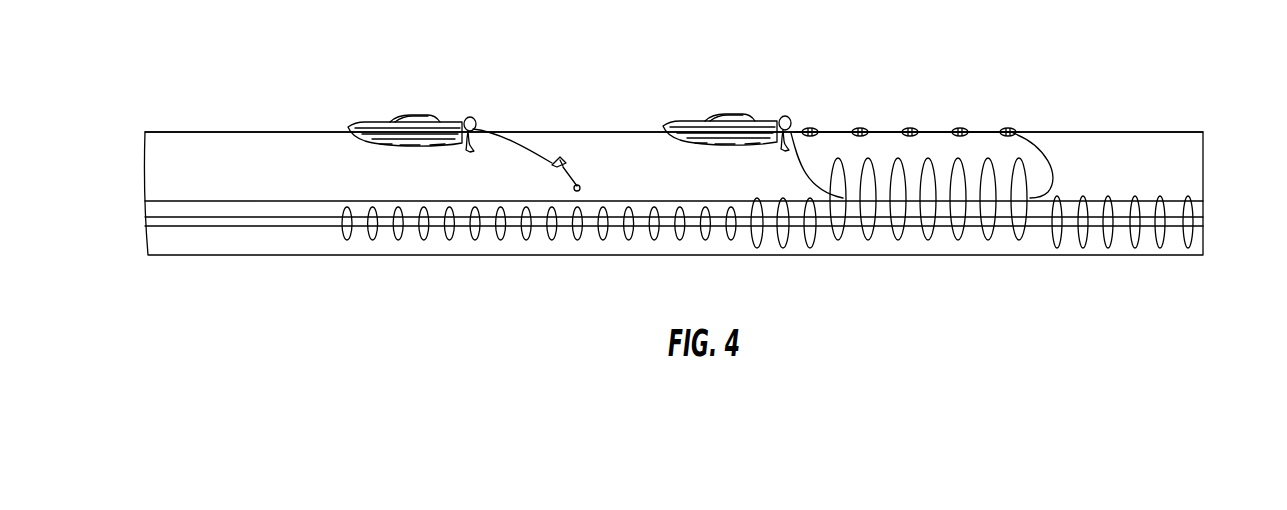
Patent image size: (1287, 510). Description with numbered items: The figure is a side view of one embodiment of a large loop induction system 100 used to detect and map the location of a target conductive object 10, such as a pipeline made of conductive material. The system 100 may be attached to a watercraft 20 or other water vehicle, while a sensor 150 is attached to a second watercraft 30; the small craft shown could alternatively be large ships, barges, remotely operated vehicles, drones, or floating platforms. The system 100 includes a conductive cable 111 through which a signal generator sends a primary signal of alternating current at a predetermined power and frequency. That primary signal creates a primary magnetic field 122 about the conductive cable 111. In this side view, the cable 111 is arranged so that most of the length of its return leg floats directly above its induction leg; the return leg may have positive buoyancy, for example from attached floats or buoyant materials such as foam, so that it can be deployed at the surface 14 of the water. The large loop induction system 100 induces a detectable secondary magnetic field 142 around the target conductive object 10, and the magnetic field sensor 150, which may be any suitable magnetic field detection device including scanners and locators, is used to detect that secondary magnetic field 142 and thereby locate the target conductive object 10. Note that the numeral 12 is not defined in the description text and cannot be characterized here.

The target conductive object 10 is at (1200, 216).
The water layer 12 is at (1186, 201).
The surface 14 is at (1165, 130).
The watercraft 20 is at (745, 118).
The second watercraft 30 is at (425, 118).
The large loop induction system 100 is at (996, 68).
The conductive cable 111 is at (885, 134).
The primary magnetic field 122 is at (758, 249).
The secondary magnetic field 142 is at (437, 257).
The sensor 150 is at (565, 160).